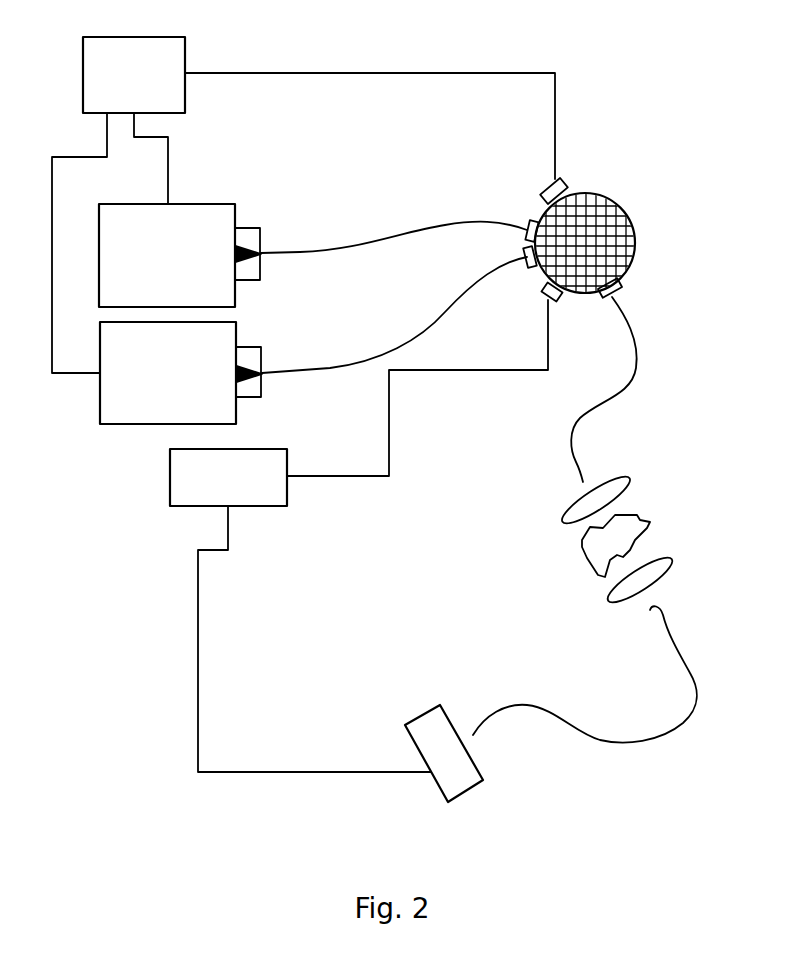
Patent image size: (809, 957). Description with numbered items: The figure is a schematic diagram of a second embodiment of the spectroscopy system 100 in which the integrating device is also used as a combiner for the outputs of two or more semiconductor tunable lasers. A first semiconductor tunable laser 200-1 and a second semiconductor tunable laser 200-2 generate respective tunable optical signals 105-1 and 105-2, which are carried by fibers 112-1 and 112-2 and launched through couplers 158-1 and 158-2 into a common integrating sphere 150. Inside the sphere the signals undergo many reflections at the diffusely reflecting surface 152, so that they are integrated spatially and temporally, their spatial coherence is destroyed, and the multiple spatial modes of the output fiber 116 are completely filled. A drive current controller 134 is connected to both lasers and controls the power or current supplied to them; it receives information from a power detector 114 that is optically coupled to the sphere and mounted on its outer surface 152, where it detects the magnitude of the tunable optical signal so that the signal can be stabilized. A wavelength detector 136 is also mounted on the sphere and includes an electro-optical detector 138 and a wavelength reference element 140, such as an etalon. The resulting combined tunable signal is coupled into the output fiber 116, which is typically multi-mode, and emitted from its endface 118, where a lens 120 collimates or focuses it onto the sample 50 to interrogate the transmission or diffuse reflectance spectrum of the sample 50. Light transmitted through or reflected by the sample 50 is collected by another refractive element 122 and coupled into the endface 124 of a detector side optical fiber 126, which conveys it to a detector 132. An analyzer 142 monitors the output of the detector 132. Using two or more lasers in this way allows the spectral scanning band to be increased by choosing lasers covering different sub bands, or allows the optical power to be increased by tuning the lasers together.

The spectroscopy system 100 is at (664, 97).
The drive current controller 134 is at (185, 58).
The first semiconductor tunable laser 200-1 is at (235, 205).
The second semiconductor tunable laser 200-2 is at (236, 322).
The first tunable optical signal 105-1 is at (246, 249).
The second tunable optical signal 105-2 is at (249, 368).
The first optical fiber 112-1 is at (353, 253).
The second optical fiber 112-2 is at (365, 363).
The analyzer 142 is at (287, 449).
The integrating sphere 150 is at (589, 193).
The power detector 114 is at (555, 179).
The first coupler 158-1 is at (530, 222).
The second coupler 158-2 is at (527, 253).
The outer surface 152 is at (623, 218).
The electro-optical detector 138 is at (545, 302).
The wavelength reference element 140 is at (543, 279).
The wavelength detector 136 is at (563, 307).
The output fiber 116 is at (628, 320).
The lens 120 is at (630, 480).
The endface 118 is at (582, 482).
The sample 50 is at (645, 518).
The refractive element 122 is at (674, 557).
The endface 124 is at (653, 613).
The detector side optical fiber 126 is at (630, 742).
The detector 132 is at (475, 786).